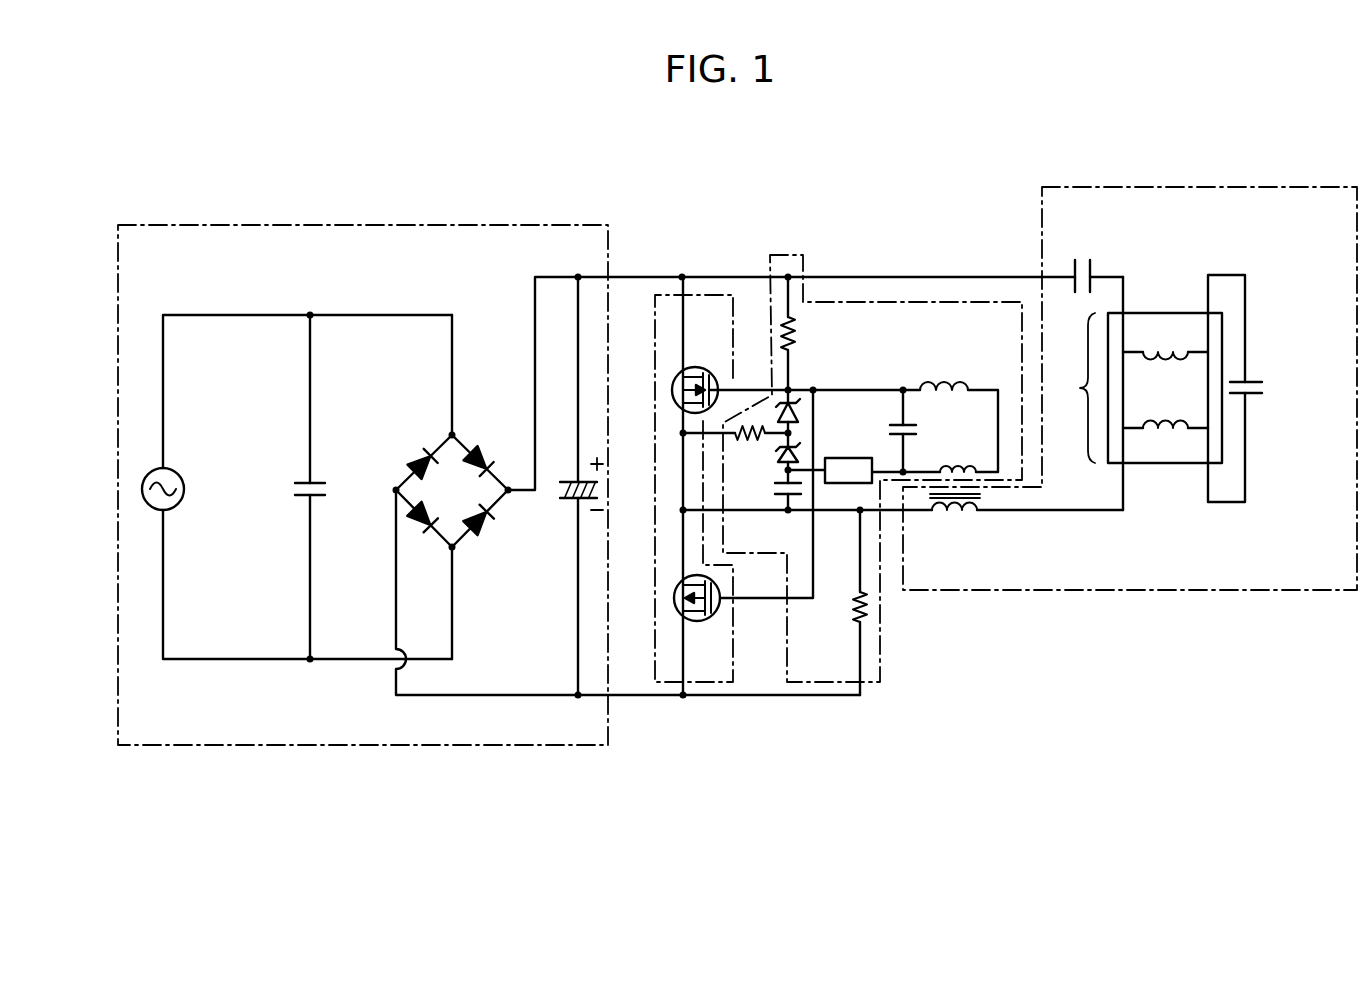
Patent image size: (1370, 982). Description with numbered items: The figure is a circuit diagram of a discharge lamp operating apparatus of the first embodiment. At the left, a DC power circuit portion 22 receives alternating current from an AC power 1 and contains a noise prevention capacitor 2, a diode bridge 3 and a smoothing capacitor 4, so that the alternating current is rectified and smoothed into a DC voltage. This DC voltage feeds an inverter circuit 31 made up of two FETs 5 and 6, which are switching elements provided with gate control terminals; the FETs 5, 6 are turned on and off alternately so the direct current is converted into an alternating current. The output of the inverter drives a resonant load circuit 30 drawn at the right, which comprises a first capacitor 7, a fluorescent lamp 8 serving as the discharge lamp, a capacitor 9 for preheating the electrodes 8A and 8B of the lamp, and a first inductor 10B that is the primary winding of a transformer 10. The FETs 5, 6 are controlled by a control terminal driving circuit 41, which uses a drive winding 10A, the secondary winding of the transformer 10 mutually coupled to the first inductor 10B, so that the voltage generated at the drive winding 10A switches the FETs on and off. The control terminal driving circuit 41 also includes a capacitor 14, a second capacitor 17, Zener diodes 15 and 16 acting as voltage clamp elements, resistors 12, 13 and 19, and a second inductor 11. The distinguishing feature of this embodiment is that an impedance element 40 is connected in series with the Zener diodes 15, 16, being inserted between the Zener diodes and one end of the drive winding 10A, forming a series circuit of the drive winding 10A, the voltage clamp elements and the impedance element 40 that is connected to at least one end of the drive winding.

The AC power 1 is at (178, 472).
The noise prevention capacitor 2 is at (292, 492).
The diode bridge 3 is at (420, 445).
The smoothing capacitor 4 is at (565, 498).
The FET 5 is at (705, 366).
The FET 6 is at (716, 618).
The first capacitor 7 is at (1085, 258).
The fluorescent lamp 8 is at (1137, 388).
The electrode 8A is at (1163, 345).
The electrode 8B is at (1160, 440).
The capacitor 9 is at (1265, 390).
The transformer 10 is at (988, 530).
The drive winding 10A is at (967, 460).
The first inductor 10B is at (978, 513).
The second inductor 11 is at (940, 378).
The resistor 12 is at (806, 331).
The resistor 13 is at (750, 443).
The capacitor 14 is at (773, 502).
The Zener diode 15 is at (793, 396).
The Zener diode 16 is at (802, 448).
The second capacitor 17 is at (893, 420).
The resistor 19 is at (853, 608).
The DC power circuit portion 22 is at (500, 225).
The resonant load circuit 30 is at (1135, 592).
The inverter circuit 31 is at (662, 295).
The impedance element 40 is at (845, 485).
The control terminal driving circuit 41 is at (882, 640).